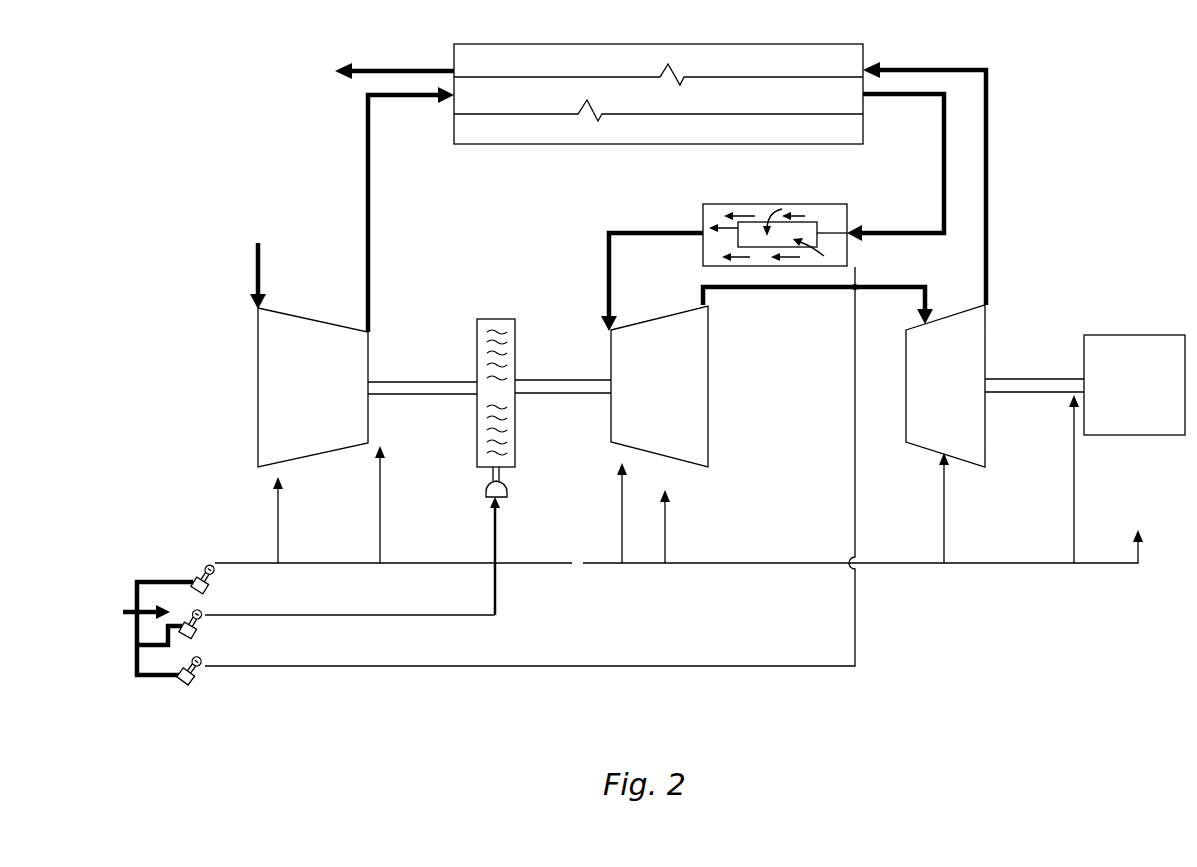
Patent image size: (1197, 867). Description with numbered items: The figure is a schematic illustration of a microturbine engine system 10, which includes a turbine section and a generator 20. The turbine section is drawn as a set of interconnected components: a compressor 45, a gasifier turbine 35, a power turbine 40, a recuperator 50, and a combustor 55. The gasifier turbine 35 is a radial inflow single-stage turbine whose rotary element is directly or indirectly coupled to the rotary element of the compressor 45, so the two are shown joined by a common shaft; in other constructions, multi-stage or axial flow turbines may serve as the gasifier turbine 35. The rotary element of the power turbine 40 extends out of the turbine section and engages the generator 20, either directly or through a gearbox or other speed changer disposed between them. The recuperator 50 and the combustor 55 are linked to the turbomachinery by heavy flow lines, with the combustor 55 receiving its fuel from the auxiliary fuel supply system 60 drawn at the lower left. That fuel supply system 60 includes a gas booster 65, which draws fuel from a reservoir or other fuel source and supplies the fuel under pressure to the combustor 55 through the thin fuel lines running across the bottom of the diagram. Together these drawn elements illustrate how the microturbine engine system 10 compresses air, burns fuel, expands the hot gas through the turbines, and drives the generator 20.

The microturbine engine system 10 is at (1017, 49).
The generator 20 is at (1107, 395).
The gasifier turbine 35 is at (620, 345).
The power turbine 40 is at (972, 335).
The compressor 45 is at (282, 323).
The recuperator 50 is at (498, 133).
The combustor 55 is at (713, 208).
The fuel supply system 60 is at (162, 706).
The gas booster 65 is at (193, 683).